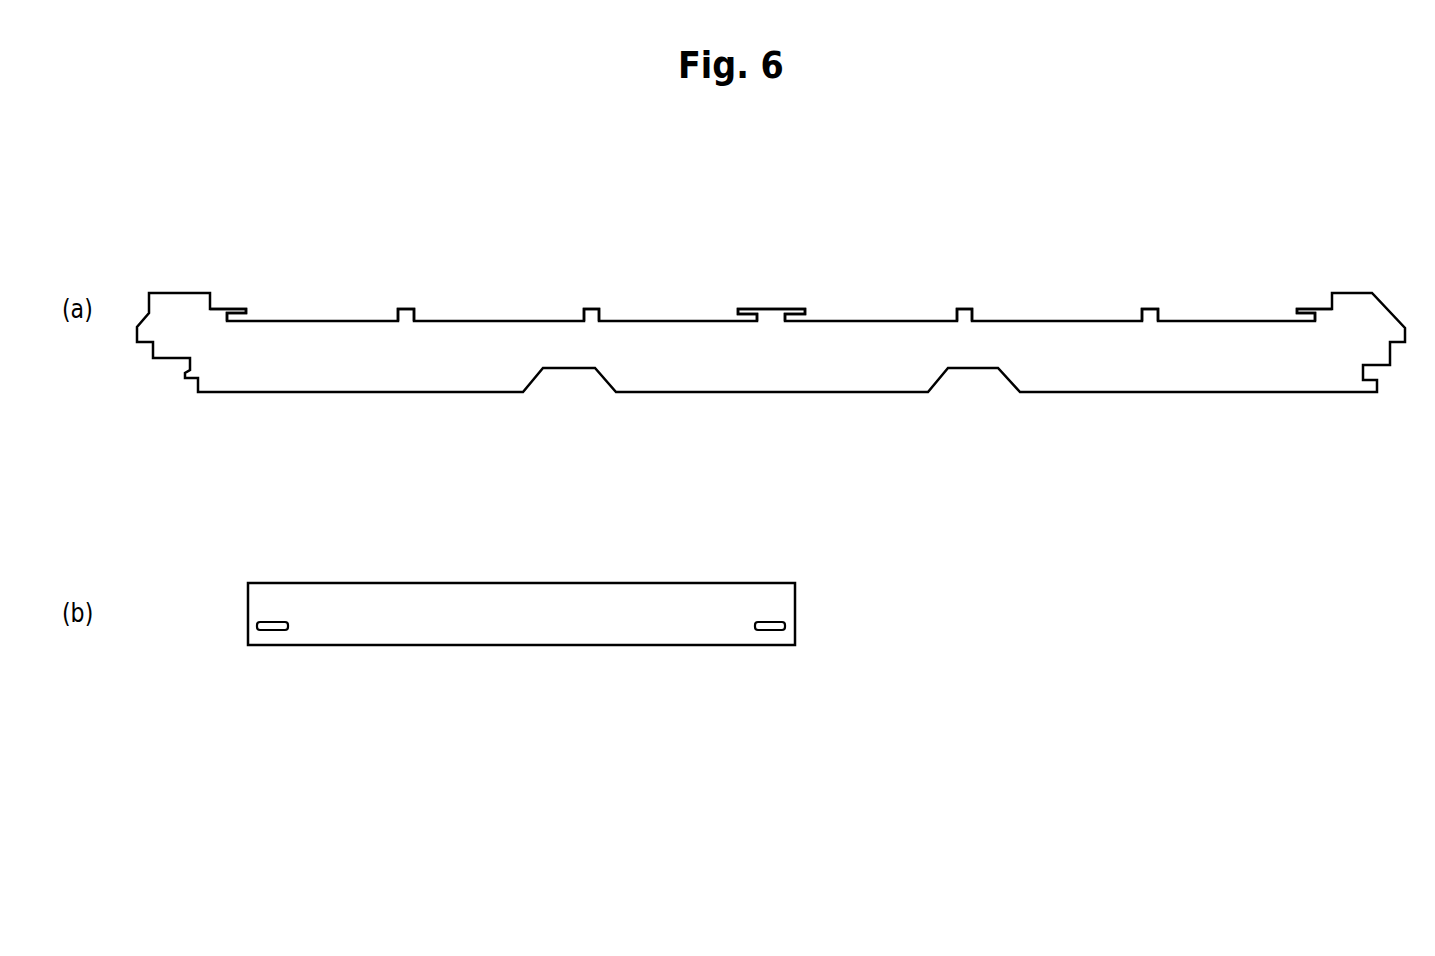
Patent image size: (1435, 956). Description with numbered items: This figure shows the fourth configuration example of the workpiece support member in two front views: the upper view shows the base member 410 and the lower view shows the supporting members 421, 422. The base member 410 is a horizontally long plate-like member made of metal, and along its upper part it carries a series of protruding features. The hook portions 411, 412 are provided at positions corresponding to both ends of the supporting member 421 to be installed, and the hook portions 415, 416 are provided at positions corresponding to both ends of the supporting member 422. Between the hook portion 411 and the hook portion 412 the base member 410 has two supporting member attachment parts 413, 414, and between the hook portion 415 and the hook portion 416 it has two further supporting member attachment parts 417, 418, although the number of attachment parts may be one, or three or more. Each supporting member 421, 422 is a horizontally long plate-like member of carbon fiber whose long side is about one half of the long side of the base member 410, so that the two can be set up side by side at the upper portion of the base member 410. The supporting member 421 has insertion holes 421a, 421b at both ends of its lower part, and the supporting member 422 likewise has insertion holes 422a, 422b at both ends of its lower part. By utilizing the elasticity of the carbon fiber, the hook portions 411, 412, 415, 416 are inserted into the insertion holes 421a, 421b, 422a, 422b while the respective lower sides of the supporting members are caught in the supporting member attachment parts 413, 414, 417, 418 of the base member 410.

The base member 410 is at (1052, 382).
The hook portion 411 is at (241, 308).
The hook portion 412 is at (745, 309).
The supporting member attachment part 413 is at (407, 309).
The supporting member attachment part 414 is at (592, 309).
The hook portion 415 is at (803, 309).
The hook portion 416 is at (1300, 309).
The supporting member attachment part 417 is at (965, 309).
The supporting member attachment part 418 is at (1150, 309).
The supporting member 421 is at (795, 607).
The supporting member 422 is at (605, 614).
The insertion hole 421a is at (271, 631).
The insertion hole 422a is at (318, 673).
The insertion hole 421b is at (770, 631).
The insertion hole 422b is at (818, 673).